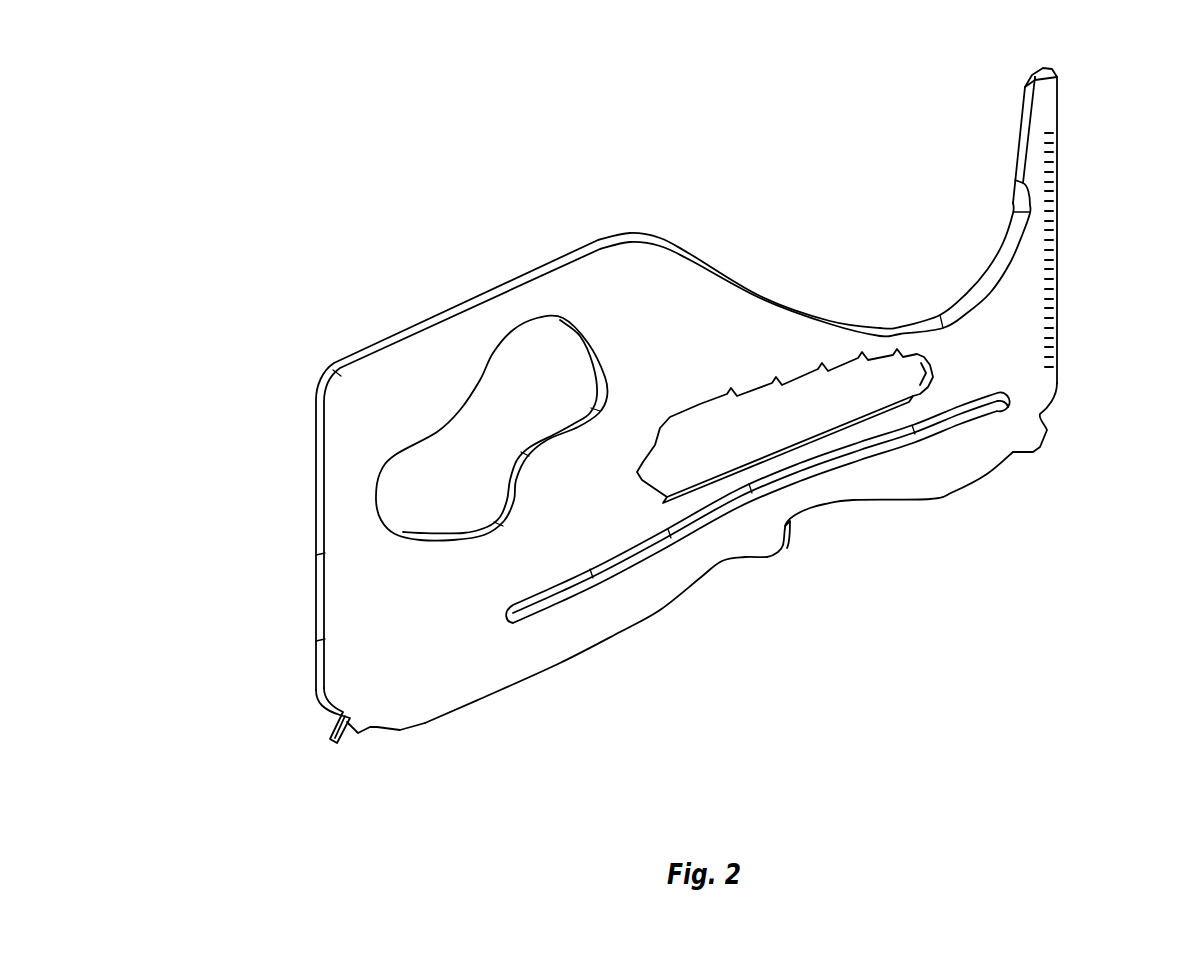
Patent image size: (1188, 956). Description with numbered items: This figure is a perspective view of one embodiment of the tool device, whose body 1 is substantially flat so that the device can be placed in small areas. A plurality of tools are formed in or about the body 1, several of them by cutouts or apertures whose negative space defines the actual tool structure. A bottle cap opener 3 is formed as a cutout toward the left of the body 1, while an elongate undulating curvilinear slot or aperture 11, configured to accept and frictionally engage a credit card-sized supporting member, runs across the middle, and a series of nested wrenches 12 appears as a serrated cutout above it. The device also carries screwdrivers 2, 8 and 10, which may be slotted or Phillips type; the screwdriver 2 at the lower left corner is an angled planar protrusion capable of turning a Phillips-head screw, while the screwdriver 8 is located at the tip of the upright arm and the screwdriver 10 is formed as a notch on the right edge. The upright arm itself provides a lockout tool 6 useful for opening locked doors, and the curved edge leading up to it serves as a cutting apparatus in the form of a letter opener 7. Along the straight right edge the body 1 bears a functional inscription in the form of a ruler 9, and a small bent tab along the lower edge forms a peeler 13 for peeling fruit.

The body 1 is at (448, 632).
The screwdriver 2 is at (325, 742).
The bottle cap opener 3 is at (398, 507).
The lockout tool 6 is at (1010, 130).
The letter opener 7 is at (988, 245).
The screwdriver 8 is at (1060, 70).
The ruler 9 is at (1063, 163).
The screwdriver 10 is at (1052, 438).
The elongate undulating curvilinear slot 11 is at (937, 418).
The nested wrenches 12 is at (778, 417).
The peeler 13 is at (753, 567).